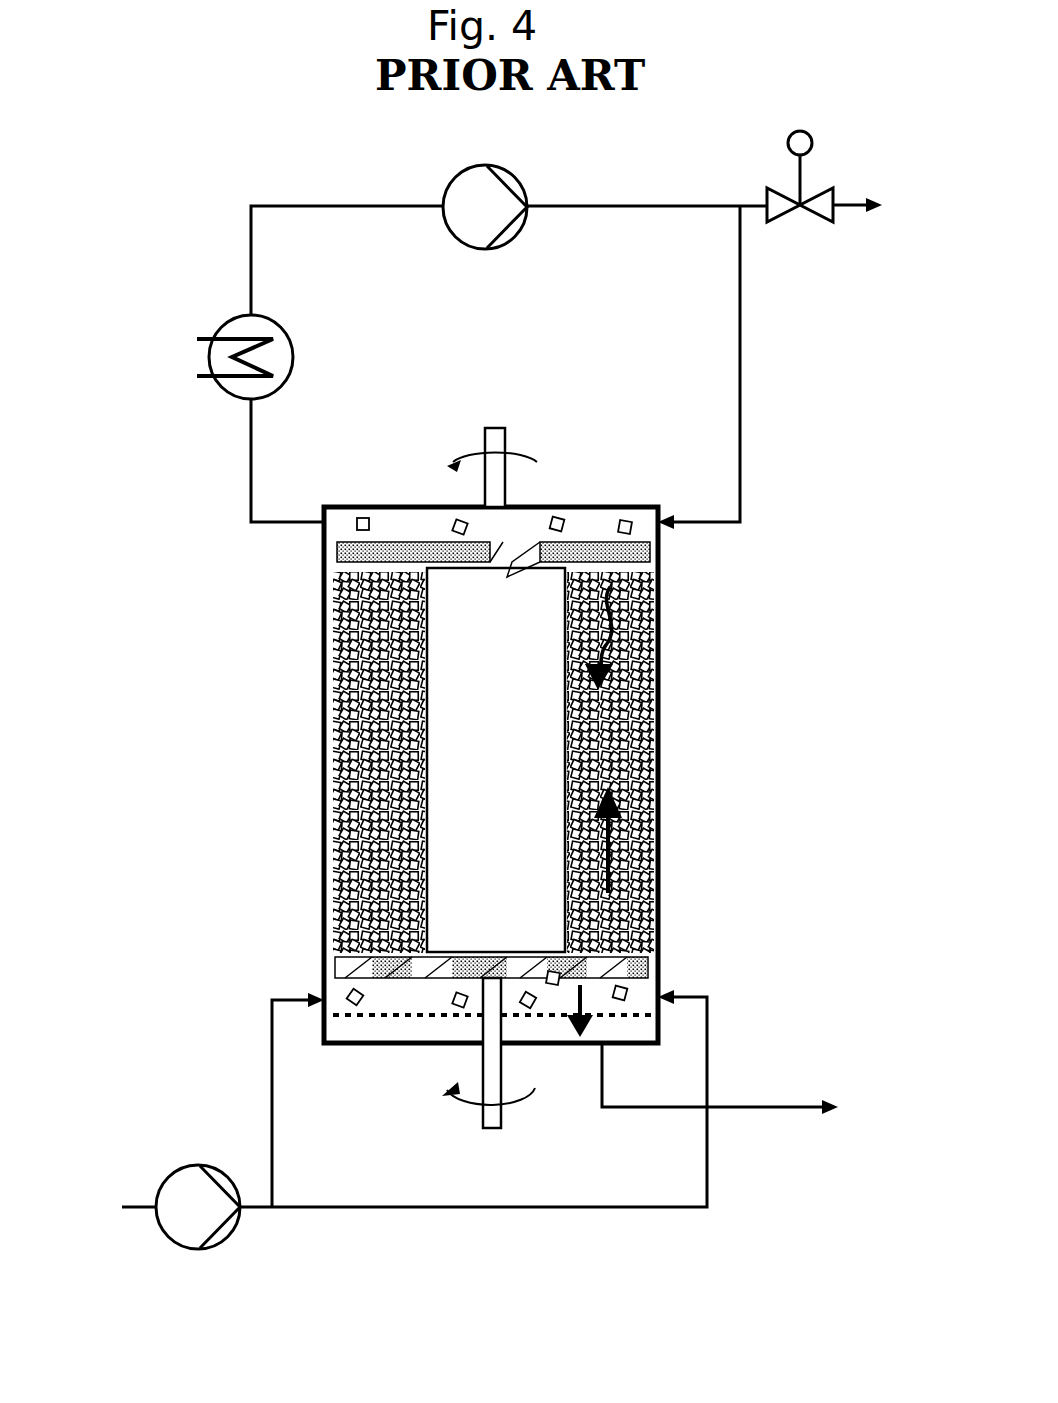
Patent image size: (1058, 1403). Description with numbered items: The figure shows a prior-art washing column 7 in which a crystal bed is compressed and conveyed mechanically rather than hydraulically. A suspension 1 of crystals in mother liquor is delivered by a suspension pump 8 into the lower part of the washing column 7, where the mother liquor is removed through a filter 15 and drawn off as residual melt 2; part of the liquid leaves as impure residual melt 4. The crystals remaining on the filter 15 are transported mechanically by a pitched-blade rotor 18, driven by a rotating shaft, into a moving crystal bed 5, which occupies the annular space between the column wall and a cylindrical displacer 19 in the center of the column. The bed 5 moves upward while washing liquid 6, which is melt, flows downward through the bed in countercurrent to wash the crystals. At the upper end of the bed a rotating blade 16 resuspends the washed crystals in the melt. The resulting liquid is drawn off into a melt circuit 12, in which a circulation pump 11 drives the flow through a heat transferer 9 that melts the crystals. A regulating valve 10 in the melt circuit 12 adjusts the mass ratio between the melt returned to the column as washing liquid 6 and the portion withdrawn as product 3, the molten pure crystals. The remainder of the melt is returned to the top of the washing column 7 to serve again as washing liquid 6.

The suspension 1 is at (125, 1205).
The residual melt (mother liquor) 2 is at (740, 1087).
The product (molten pure crystals) 3 is at (876, 205).
The impure residual melt 4 is at (592, 1005).
The moving crystal bed 5 is at (620, 807).
The washing liquid (melt) 6 is at (603, 668).
The washing column 7 is at (322, 685).
The suspension pump 8 is at (187, 1197).
The heat transferer to melt the crystals 9 is at (237, 380).
The regulating valve to adjust the mass ratio of washing liquid (melt)/product 10 is at (778, 207).
The circulation pump of the melt circuit 11 is at (472, 228).
The melt circuit 12 is at (641, 208).
The filter 15 is at (385, 1017).
The rotating blade for resuspending the washed crystals 16 is at (333, 558).
The pitched-blade rotor for the transport of the crystal bed 18 is at (340, 963).
The cylindrical displacer 19 is at (485, 797).